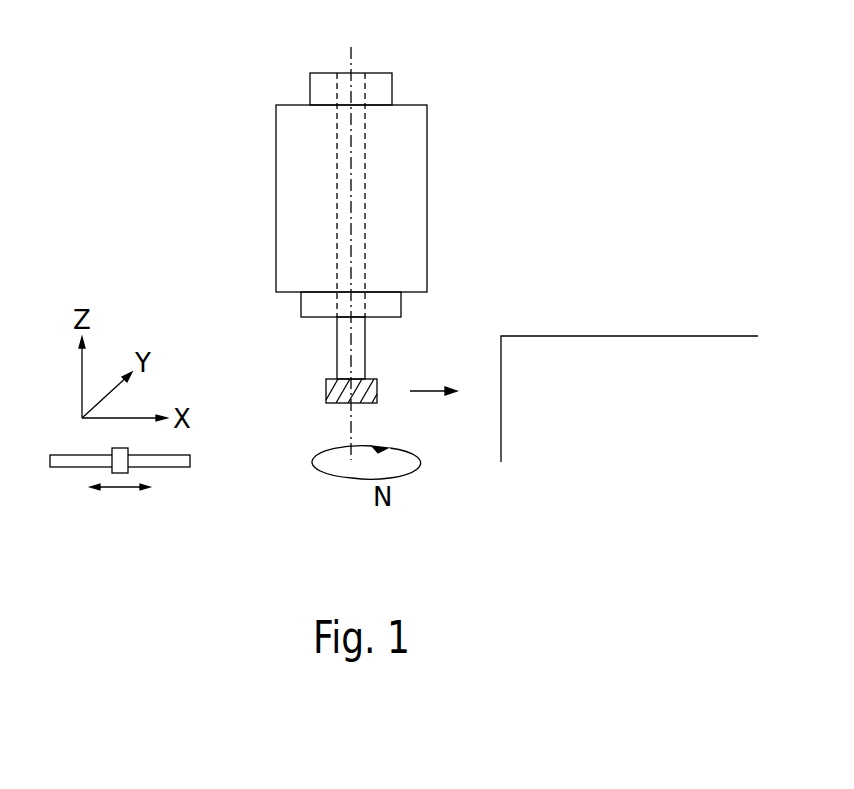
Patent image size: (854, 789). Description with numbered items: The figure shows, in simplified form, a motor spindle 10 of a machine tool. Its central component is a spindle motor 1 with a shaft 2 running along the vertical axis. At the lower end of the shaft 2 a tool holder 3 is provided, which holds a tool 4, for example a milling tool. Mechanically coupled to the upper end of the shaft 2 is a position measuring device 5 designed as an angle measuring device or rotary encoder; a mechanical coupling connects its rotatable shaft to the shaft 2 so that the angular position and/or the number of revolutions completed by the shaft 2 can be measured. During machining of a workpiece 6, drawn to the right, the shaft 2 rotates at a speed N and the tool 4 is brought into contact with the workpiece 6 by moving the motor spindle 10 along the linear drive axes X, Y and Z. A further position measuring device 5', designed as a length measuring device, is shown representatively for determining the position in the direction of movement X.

The motor spindle 10 is at (178, 98).
The spindle motor 1 is at (276, 227).
The shaft 2 is at (337, 157).
The tool holder 3 is at (301, 305).
The tool 4 is at (326, 390).
The position measuring device 5 is at (346, 56).
The position measuring device 5' is at (111, 490).
The workpiece 6 is at (604, 336).